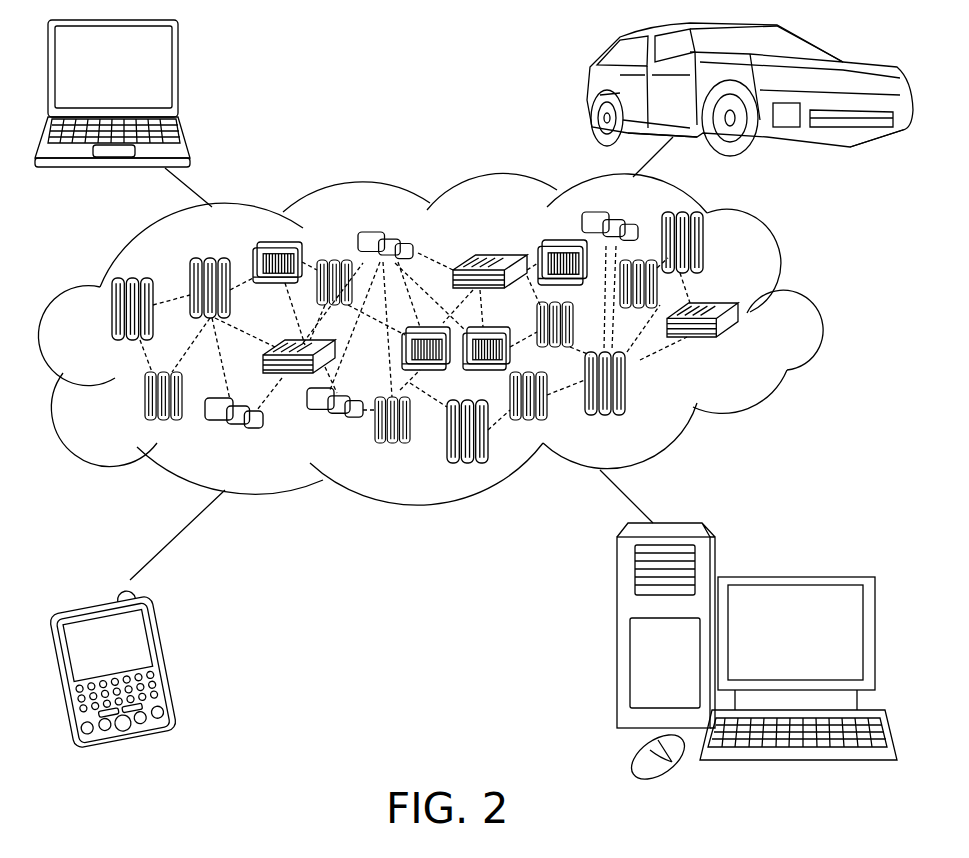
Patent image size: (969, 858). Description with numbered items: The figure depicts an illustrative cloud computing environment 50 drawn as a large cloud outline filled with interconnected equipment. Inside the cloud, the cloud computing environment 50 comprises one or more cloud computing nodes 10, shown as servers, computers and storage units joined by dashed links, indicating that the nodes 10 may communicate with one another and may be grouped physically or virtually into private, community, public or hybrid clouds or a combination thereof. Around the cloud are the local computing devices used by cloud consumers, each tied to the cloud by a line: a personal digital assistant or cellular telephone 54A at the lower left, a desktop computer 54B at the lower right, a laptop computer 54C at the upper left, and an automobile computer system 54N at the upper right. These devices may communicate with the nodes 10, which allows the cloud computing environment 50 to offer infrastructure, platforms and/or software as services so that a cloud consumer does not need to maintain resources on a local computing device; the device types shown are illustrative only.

The cloud computing environment 50 is at (792, 318).
The cloud computing node 10 is at (752, 348).
The personal digital assistant or cellular telephone 54A is at (166, 662).
The desktop computer 54B is at (794, 575).
The laptop computer 54C is at (178, 76).
The automobile computer system 54N is at (588, 88).